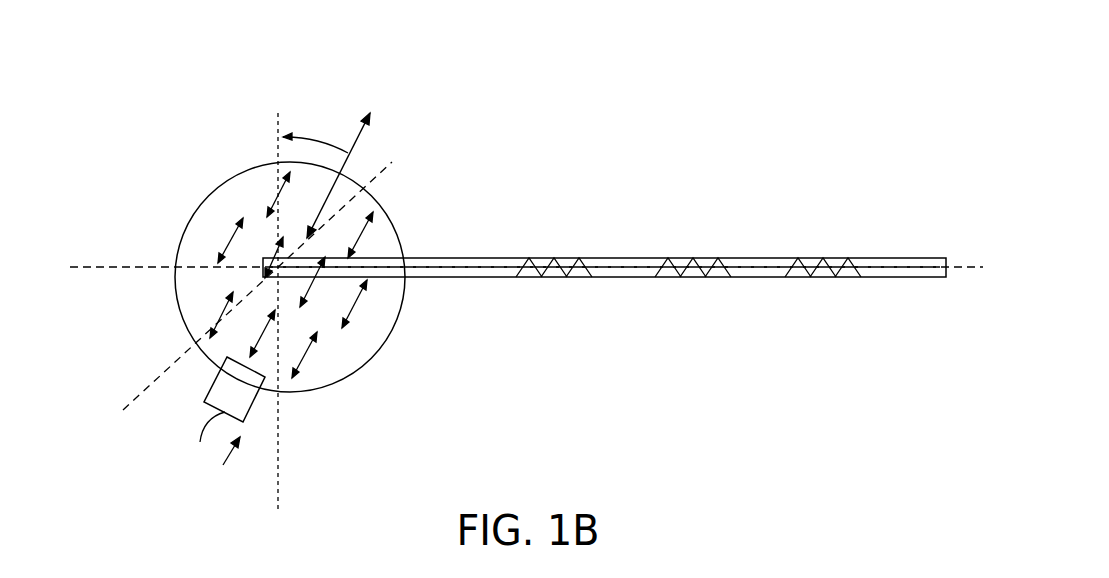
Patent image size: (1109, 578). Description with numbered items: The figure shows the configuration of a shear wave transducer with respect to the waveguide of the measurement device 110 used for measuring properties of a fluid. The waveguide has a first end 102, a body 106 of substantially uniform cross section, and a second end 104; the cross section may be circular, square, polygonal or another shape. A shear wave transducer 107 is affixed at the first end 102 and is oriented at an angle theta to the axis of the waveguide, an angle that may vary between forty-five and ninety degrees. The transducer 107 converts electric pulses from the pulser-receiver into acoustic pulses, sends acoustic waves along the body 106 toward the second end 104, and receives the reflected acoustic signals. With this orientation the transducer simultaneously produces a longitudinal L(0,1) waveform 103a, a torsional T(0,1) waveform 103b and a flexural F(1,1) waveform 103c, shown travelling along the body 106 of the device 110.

The waveguide sensor device 110 is at (730, 77).
The first end 102 is at (258, 267).
The shear wave transducer 107 is at (173, 297).
The second end 104 is at (905, 259).
The body 106 is at (755, 257).
The longitudinal L(0,1) waveform 103a is at (563, 278).
The torsional T(0,1) waveform 103b is at (703, 278).
The flexural F(1,1) waveform 103c is at (827, 278).